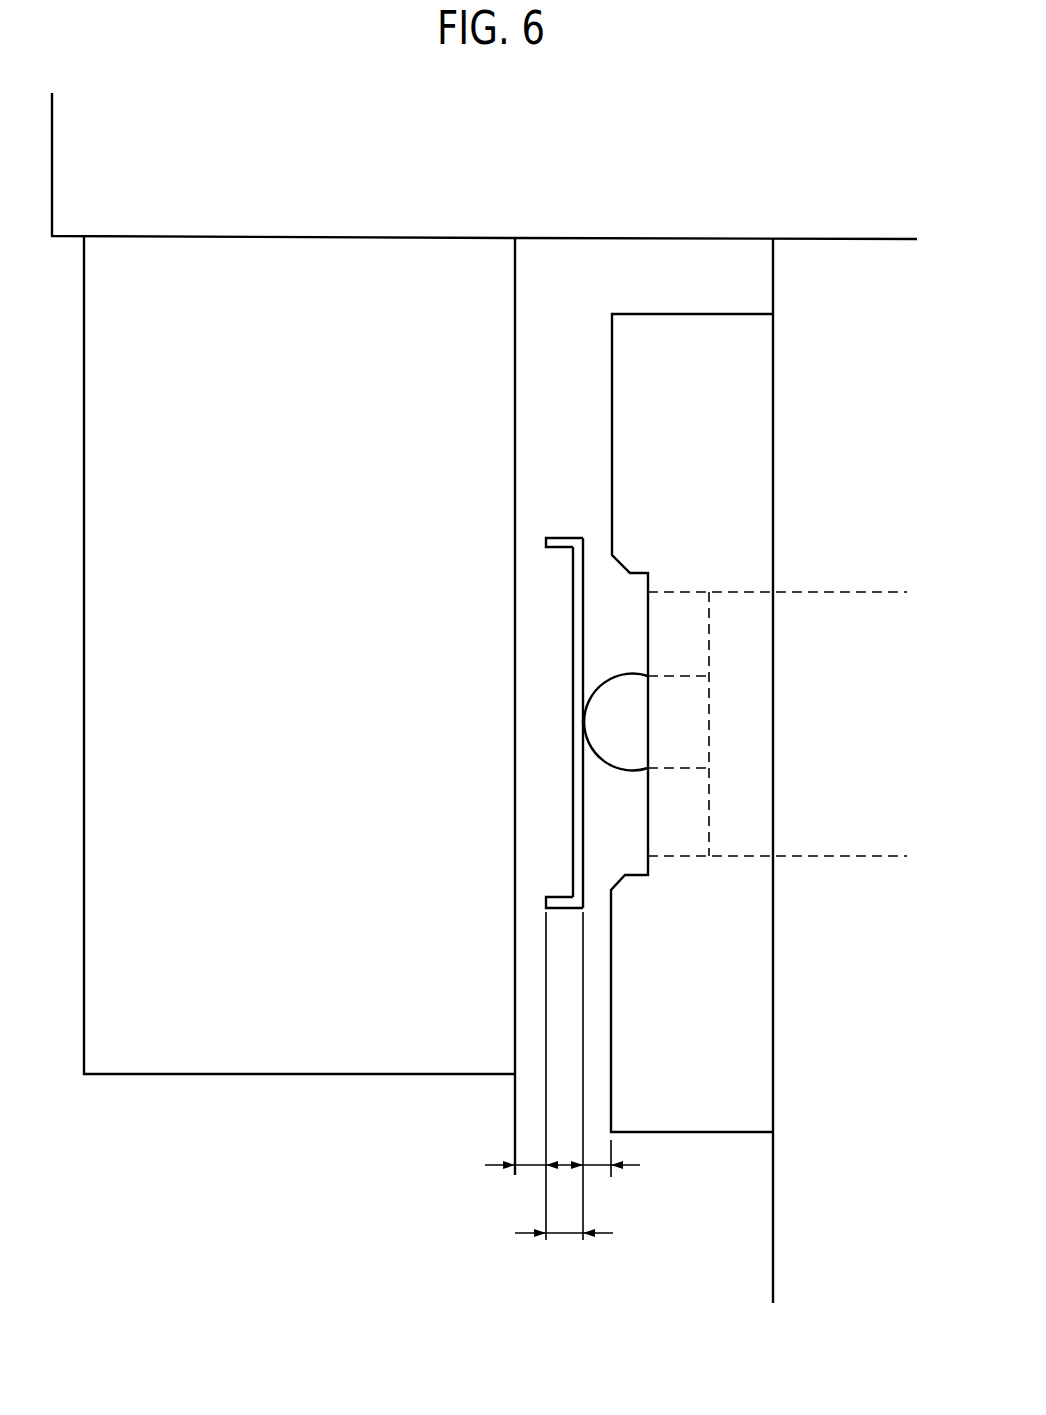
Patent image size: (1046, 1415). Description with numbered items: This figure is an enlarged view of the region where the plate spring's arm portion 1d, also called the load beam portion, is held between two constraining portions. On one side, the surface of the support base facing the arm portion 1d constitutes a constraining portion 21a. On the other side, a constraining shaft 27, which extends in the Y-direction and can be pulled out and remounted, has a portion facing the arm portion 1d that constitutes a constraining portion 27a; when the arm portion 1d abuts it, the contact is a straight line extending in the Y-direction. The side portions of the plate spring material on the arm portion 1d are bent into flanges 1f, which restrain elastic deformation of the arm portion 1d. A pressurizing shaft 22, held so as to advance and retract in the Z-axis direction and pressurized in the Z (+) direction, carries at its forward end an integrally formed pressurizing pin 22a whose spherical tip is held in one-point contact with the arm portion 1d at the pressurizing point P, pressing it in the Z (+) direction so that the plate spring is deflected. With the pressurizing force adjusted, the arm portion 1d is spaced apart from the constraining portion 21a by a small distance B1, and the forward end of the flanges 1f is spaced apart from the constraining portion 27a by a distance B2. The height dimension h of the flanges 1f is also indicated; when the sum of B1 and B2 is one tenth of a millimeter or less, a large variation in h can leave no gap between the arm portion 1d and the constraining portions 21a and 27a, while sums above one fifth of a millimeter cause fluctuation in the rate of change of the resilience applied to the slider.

The constraining shaft 27 is at (183, 1049).
The constraining portion 27a is at (515, 815).
The arm portion 1d is at (577, 663).
The flanges 1f is at (563, 537).
The constraining portion 21a is at (611, 970).
The pressurizing shaft 22 is at (857, 620).
The pressurizing pin 22a is at (617, 713).
The pressurizing point P is at (583, 722).
The distance B1 is at (592, 1168).
The distance B2 is at (532, 1168).
The height dimension of the flanges h is at (564, 1248).